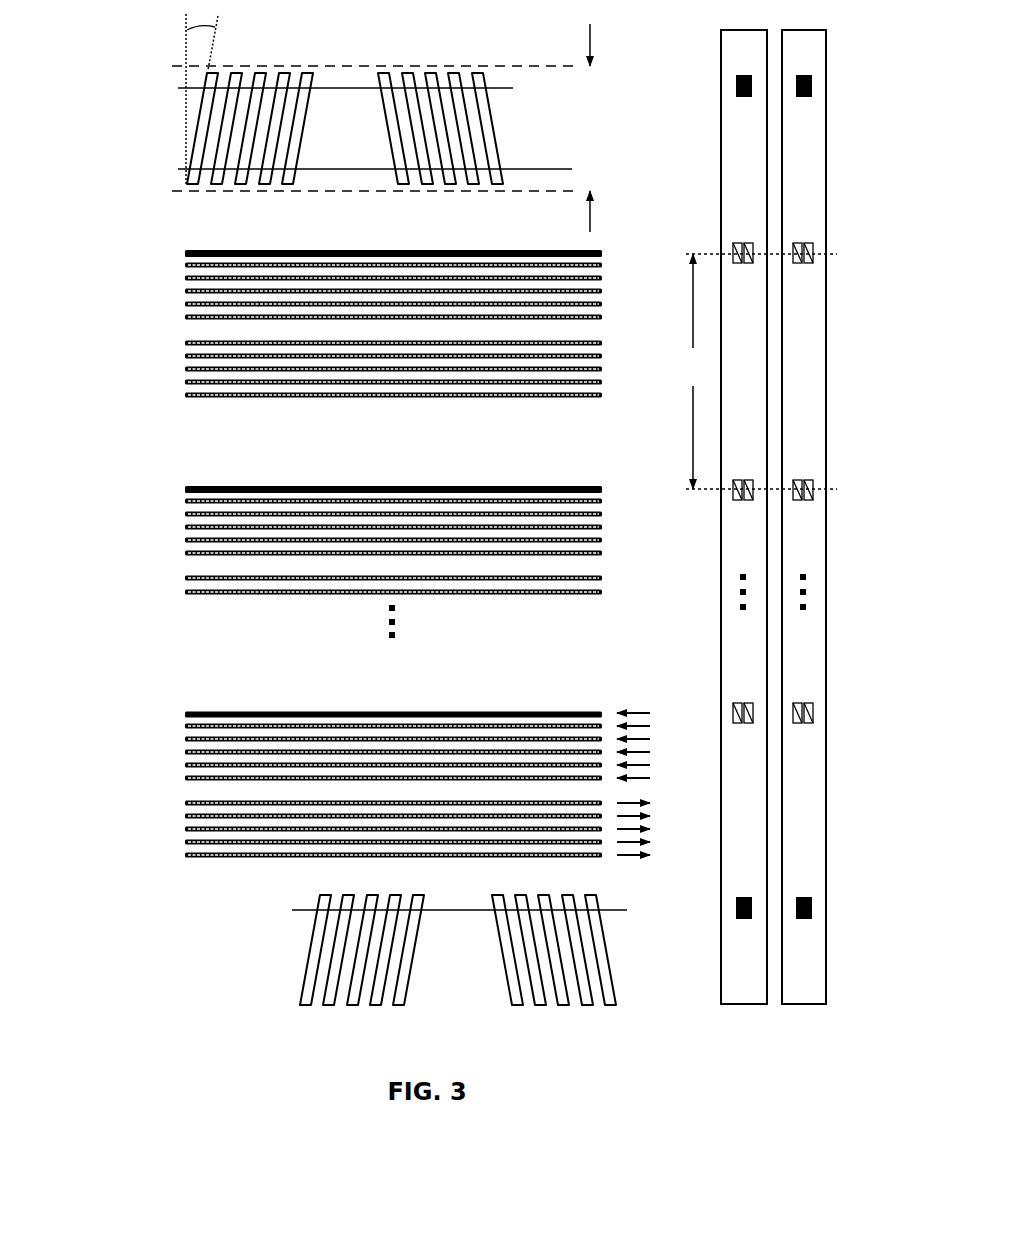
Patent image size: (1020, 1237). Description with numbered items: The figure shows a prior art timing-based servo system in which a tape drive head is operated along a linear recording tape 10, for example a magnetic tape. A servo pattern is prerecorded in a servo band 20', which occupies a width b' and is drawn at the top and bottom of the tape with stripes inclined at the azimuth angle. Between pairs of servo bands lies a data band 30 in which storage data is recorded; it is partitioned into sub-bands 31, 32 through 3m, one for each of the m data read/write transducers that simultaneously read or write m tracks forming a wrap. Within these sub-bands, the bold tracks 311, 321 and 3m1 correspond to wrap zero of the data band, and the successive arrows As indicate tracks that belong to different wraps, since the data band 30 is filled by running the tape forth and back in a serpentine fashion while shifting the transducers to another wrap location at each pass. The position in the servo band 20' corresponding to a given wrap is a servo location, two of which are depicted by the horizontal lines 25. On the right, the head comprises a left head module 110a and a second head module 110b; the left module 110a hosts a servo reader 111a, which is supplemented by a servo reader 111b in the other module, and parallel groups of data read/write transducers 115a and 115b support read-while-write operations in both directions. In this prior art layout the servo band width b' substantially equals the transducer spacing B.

The linear recording tape 10 is at (117, 869).
The servo band 20' is at (373, 548).
The servo location lines 25 is at (507, 88).
The data band 30 is at (107, 250).
The first sub-band 31 is at (165, 250).
The first bold track 311 is at (204, 250).
The second sub-band 32 is at (165, 486).
The second bold track 321 is at (203, 487).
The m-th sub-band 3m is at (165, 712).
The m-th bold track 3m1 is at (204, 713).
The successive arrows As is at (643, 712).
The left head module 110a is at (745, 1001).
The right head module 110b is at (803, 1001).
The servo reader 111a is at (736, 80).
The servo reader 111b is at (812, 80).
The data read/write transducers 115a is at (733, 246).
The data read/write transducers 115b is at (813, 246).